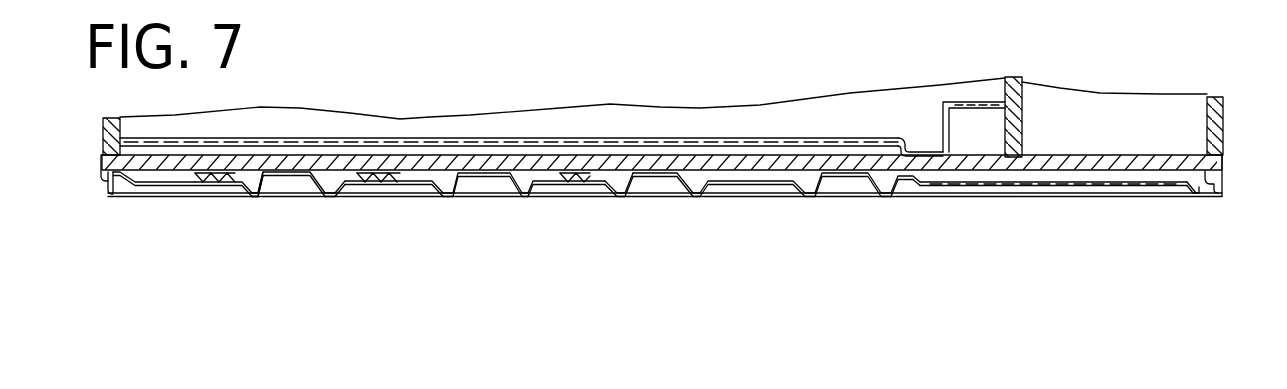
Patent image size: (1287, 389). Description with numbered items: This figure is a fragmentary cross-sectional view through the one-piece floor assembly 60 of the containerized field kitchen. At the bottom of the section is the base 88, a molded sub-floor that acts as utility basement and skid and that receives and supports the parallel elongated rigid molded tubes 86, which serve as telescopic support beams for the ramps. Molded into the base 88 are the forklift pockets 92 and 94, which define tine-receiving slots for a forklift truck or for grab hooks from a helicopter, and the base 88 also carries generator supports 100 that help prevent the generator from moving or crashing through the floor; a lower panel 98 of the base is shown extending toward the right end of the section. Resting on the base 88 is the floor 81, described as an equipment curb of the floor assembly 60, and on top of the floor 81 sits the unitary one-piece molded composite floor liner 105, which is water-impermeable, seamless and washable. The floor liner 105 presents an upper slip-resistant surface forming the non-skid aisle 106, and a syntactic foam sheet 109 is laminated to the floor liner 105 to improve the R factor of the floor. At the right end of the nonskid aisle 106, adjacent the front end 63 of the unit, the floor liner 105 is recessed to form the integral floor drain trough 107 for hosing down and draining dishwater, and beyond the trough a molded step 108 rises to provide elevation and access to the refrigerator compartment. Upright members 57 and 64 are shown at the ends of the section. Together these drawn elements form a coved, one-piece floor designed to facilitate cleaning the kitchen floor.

The frame member 57 is at (1020, 128).
The floor assembly 60 is at (509, 102).
The front end 63 is at (1225, 118).
The end frame member 64 is at (104, 135).
The equipment curb 81 is at (537, 153).
The molded tubes 86 is at (373, 176).
The base 88 is at (548, 176).
The forklift pockets 92 is at (296, 173).
The forklift pockets 94 is at (663, 176).
The bottom panel 98 is at (973, 183).
The generator supports 100 is at (1190, 184).
The floor liner 105 is at (509, 102).
The non-skid surface aisle 106 is at (509, 102).
The floor drain trough 107 is at (923, 152).
The step 108 is at (980, 104).
The syntactic foam sheet 109 is at (635, 140).